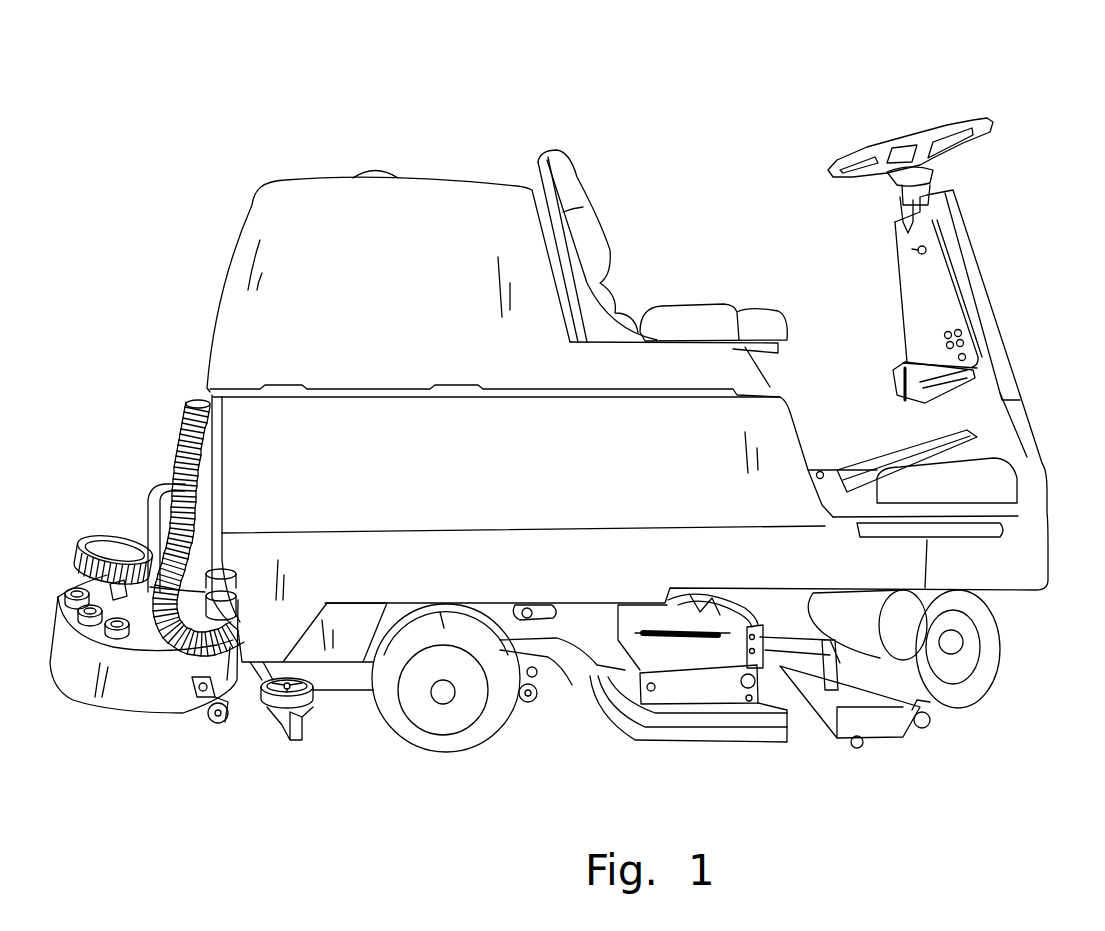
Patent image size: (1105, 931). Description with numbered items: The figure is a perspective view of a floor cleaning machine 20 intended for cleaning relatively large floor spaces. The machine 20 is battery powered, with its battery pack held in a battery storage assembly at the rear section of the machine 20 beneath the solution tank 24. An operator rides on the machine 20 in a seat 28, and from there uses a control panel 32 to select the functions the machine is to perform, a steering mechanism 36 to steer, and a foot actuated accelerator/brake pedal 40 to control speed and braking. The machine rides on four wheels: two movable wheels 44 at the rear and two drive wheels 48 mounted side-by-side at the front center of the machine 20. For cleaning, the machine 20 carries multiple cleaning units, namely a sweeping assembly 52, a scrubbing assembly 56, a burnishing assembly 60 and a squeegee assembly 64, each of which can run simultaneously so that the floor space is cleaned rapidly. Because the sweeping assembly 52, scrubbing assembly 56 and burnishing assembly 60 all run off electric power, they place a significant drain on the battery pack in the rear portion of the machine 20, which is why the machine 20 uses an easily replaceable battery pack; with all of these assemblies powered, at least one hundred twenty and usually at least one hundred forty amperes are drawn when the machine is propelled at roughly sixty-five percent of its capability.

The floor cleaning machine 20 is at (838, 102).
The solution tank 24 is at (237, 236).
The seat 28 is at (597, 205).
The control panel 32 is at (957, 287).
The steering mechanism 36 is at (987, 135).
The foot actuated accelerator/brake pedal 40 is at (897, 465).
The movable wheels 44 is at (440, 752).
The drive wheels 48 is at (970, 700).
The sweeping assembly 52 is at (882, 725).
The scrubbing assembly 56 is at (673, 738).
The burnishing assembly 60 is at (83, 707).
The squeegee assembly 64 is at (295, 725).